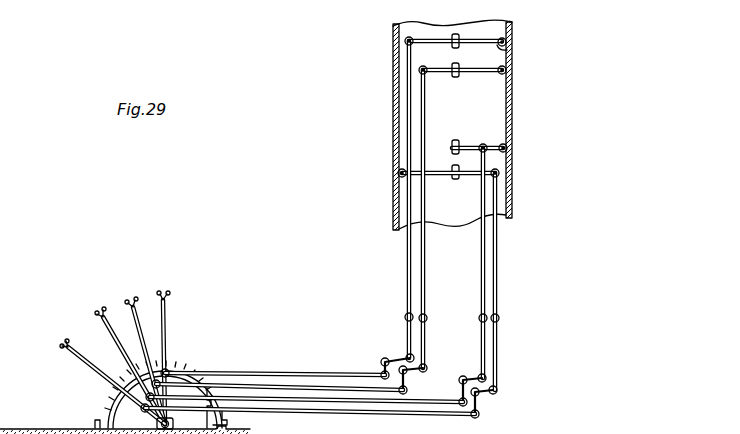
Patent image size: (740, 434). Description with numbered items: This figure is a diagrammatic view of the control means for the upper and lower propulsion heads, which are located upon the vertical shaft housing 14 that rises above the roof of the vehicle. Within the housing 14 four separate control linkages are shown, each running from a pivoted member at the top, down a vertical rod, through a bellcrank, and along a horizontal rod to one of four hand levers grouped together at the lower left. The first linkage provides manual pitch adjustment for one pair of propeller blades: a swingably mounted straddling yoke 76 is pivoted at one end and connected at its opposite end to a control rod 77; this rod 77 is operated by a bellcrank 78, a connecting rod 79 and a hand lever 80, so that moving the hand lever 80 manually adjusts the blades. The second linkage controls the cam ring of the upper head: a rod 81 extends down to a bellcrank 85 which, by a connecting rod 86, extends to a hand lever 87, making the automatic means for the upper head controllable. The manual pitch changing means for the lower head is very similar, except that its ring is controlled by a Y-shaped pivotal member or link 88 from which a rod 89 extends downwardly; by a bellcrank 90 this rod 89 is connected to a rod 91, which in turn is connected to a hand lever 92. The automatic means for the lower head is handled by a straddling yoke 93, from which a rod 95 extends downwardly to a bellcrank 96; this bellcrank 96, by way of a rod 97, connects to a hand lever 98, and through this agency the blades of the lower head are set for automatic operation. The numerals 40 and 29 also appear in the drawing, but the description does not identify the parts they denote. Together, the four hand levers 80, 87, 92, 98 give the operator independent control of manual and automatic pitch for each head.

The vertical shaft housing 14 is at (512, 114).
The straddling yoke 76 is at (507, 48).
The Y-shaped pivotal member or link 88 is at (467, 147).
The straddling yoke 93 is at (438, 173).
The control rod 77 is at (409, 263).
The rod 81 is at (428, 286).
The rod 89 is at (483, 289).
The rod 95 is at (498, 287).
The bellcrank 78 is at (393, 358).
The bellcrank 85 is at (409, 376).
The bellcrank 90 is at (465, 375).
The bellcrank 96 is at (486, 397).
The connecting rod 79 is at (270, 372).
The connecting rod 86 is at (306, 387).
The horizontal rod 40 is at (340, 406).
The rod 91 is at (450, 420).
The hand lever 80 is at (167, 339).
The hand lever 87 is at (140, 304).
The hand lever 92 is at (112, 308).
The hand lever 98 is at (95, 372).
The base 29 is at (410, 431).
The rod 97 is at (296, 418).